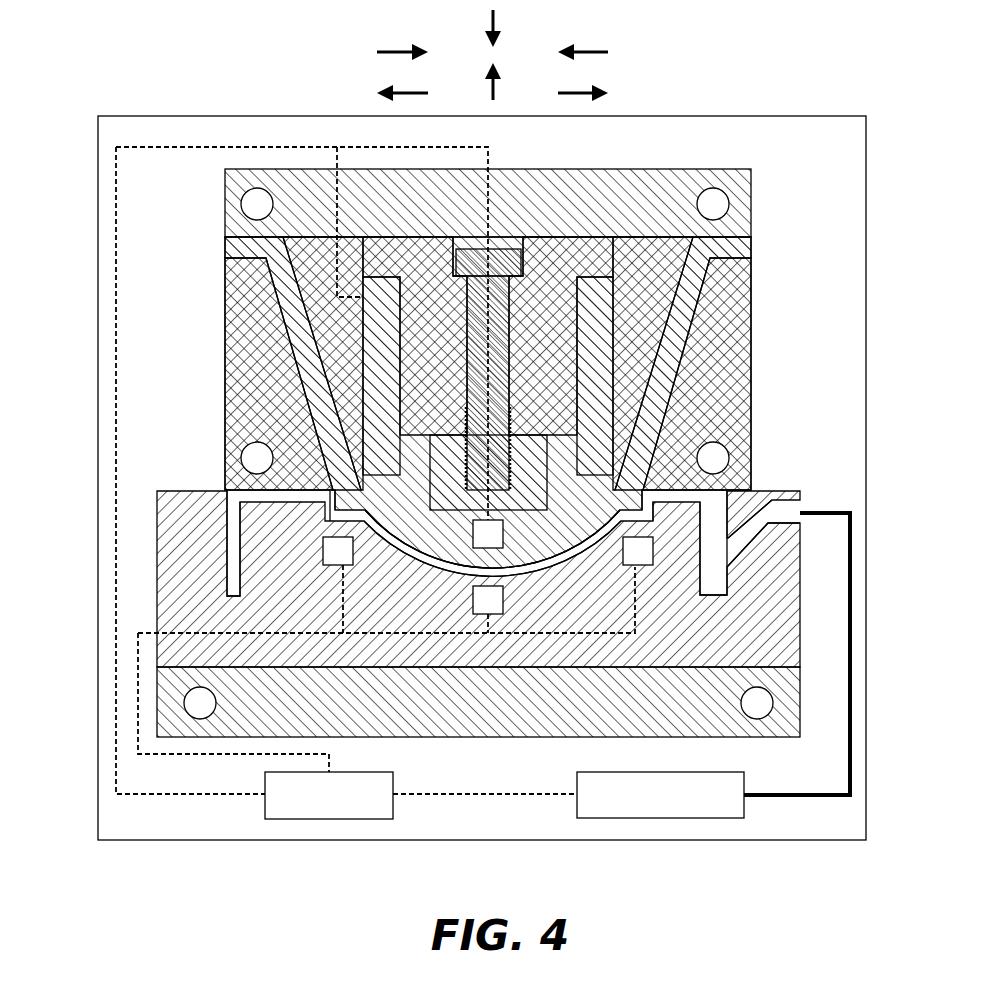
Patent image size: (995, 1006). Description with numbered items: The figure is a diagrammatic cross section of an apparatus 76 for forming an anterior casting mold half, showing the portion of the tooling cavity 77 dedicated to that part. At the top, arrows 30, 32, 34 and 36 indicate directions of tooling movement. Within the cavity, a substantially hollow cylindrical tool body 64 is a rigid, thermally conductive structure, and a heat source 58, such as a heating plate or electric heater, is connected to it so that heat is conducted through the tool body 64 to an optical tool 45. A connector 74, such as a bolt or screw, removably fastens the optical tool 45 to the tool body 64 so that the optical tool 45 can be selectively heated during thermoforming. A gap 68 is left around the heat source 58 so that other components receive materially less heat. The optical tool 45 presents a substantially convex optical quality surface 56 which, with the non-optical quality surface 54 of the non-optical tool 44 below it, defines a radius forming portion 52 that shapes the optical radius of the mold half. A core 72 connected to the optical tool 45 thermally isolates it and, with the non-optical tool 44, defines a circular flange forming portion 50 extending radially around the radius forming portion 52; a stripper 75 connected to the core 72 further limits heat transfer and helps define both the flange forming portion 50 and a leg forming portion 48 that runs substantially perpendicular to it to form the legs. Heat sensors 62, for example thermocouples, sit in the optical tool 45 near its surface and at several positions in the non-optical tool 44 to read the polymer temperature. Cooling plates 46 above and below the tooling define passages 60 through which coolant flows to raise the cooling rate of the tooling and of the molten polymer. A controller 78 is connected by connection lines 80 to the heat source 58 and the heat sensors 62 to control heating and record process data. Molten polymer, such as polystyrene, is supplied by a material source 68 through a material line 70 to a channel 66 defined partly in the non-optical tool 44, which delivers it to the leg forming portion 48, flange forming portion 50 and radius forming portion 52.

The closing direction arrows 30 is at (396, 50).
The downward direction arrow 32 is at (491, 20).
The opening direction arrows 34 is at (418, 88).
The upward direction arrow 36 is at (491, 92).
The non-optical tool 44 is at (786, 628).
The optical tool 45 is at (537, 470).
The cooling plate 46 is at (598, 178).
The leg forming portion 48 is at (224, 546).
The flange forming portion 50 is at (326, 507).
The radius forming portion 52 is at (452, 578).
The non-optical quality surface 54 is at (416, 560).
The optical quality surface 56 is at (538, 562).
The heat source 58 is at (368, 347).
The passages 60 is at (765, 713).
The heat sensor 62 is at (496, 610).
The tool body 64 is at (413, 320).
The channel 66 is at (784, 522).
The material source 68 is at (340, 362).
The material line 70 is at (800, 797).
The core 72 is at (317, 392).
The connector 74 is at (508, 250).
The stripper 75 is at (243, 347).
The apparatus 76 is at (736, 116).
The tooling cavity 77 is at (184, 444).
The controller 78 is at (333, 819).
The connection lines 80 is at (495, 850).